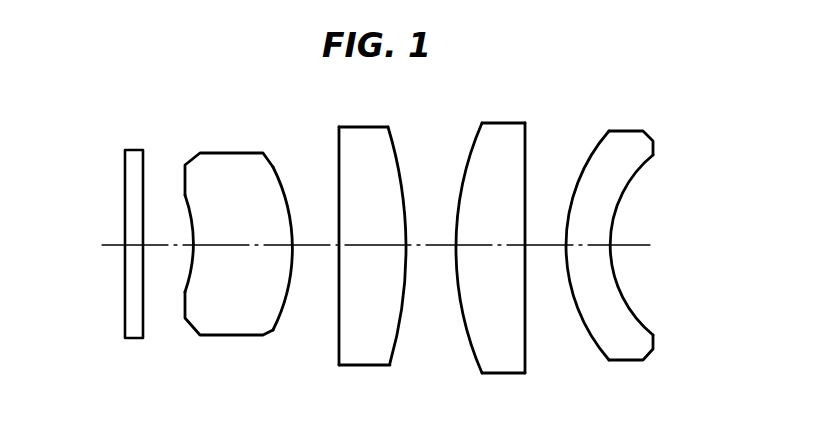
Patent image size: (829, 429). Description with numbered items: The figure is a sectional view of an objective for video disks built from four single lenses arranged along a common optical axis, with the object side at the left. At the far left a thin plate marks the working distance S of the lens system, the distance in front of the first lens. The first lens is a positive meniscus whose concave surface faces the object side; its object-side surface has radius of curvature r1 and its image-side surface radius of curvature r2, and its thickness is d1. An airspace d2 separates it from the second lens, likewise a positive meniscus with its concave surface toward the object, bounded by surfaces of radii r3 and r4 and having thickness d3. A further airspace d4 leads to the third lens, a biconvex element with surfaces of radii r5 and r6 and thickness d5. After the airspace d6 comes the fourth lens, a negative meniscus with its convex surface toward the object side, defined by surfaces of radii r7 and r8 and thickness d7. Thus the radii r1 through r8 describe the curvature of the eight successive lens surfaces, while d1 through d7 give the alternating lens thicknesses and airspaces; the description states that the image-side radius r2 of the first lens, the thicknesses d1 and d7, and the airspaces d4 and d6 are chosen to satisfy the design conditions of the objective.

The working distance S is at (157, 245).
The radius of curvature of first lens surface r1 is at (189, 210).
The radius of curvature of second lens surface r2 is at (283, 173).
The radius of curvature of third lens surface r3 is at (339, 160).
The radius of curvature of fourth lens surface r4 is at (394, 147).
The radius of curvature of fifth lens surface r5 is at (467, 165).
The radius of curvature of sixth lens surface r6 is at (527, 158).
The radius of curvature of seventh lens surface r7 is at (588, 165).
The radius of curvature of eighth lens surface r8 is at (640, 177).
The thickness of first lens d1 is at (231, 245).
The airspace between first and second lenses d2 is at (310, 245).
The thickness of second lens d3 is at (368, 245).
The airspace between second and third lenses d4 is at (429, 245).
The thickness of third lens d5 is at (490, 245).
The airspace between third and fourth lenses d6 is at (544, 245).
The thickness of fourth lens d7 is at (588, 245).